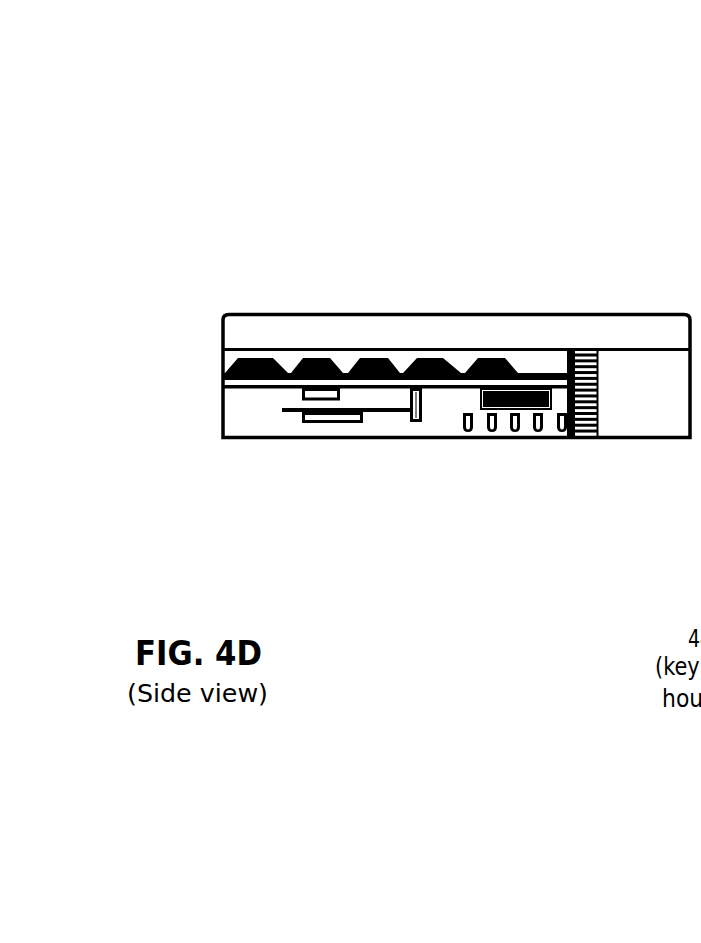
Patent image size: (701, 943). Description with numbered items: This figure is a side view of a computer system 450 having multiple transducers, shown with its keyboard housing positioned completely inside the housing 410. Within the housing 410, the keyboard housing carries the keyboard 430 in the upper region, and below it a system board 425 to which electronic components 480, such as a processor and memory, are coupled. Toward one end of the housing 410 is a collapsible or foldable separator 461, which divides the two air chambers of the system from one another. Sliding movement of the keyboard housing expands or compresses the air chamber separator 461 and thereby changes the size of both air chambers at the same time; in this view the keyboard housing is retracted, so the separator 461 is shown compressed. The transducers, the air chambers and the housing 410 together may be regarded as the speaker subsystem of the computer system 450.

The housing 410 is at (352, 313).
The system board 425 is at (252, 387).
The keyboard 430 is at (291, 368).
The computer system 450 is at (508, 240).
The foldable separator 461 is at (612, 402).
The electronic components 480 is at (455, 413).